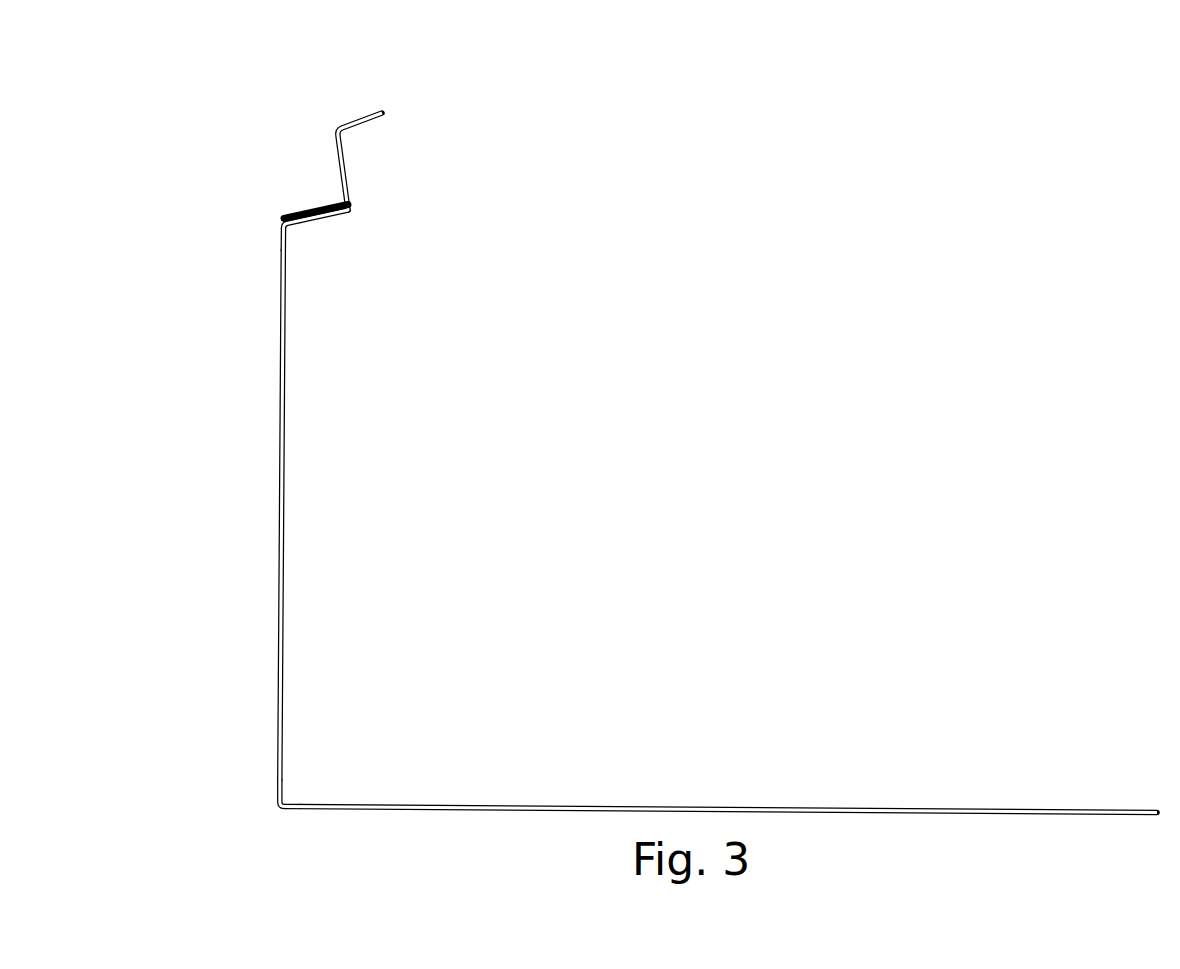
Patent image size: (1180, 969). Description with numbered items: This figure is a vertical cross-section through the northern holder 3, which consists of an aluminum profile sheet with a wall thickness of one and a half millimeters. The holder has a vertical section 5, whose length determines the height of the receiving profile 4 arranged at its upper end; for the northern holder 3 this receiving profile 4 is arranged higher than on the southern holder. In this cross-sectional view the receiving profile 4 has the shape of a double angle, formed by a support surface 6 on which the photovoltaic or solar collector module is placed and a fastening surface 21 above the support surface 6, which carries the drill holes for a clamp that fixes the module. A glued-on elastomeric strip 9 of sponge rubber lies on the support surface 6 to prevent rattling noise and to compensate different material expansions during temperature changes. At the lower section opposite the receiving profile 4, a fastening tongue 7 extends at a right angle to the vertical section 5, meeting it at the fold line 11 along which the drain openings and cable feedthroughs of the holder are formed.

The northern holder 3 is at (507, 471).
The receiving profile 4 is at (655, 422).
The vertical section 5 is at (278, 471).
The support surface 6 is at (285, 217).
The fastening tongue 7 is at (702, 807).
The elastomeric strip 9 is at (330, 202).
The fold line 11 is at (292, 803).
The fastening surface 21 is at (360, 108).